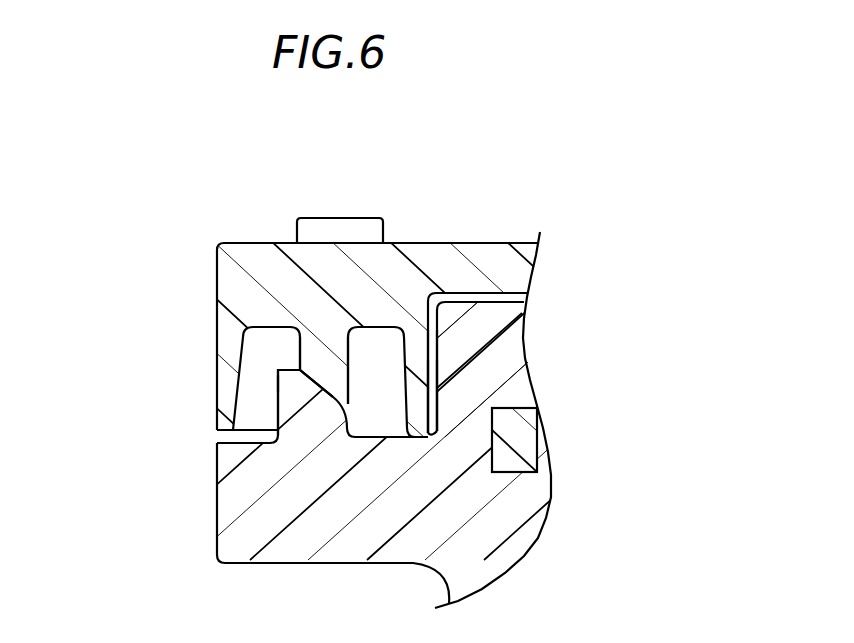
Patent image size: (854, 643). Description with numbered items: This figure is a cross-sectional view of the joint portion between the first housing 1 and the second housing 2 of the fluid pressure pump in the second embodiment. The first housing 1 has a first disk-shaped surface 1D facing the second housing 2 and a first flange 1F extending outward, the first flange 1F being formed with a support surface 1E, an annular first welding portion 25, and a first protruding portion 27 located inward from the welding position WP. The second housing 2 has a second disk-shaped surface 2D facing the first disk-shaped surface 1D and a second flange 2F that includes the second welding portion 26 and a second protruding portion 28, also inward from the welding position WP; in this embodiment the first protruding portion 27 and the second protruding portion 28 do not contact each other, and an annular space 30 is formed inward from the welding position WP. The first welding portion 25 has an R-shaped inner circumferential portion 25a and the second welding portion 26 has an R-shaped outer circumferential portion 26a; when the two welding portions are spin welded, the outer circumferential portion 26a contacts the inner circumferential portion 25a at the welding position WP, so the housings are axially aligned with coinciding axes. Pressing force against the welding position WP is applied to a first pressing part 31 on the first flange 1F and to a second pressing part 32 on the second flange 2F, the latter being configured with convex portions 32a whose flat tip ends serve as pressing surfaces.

The first housing 1 is at (435, 420).
The first flange 1F is at (215, 270).
The second housing 2 is at (421, 437).
The second flange 2F is at (215, 462).
The first disk-shaped surface 1D is at (473, 293).
The support surface 1E is at (495, 418).
The second disk-shaped surface 2D is at (503, 305).
The first welding portion 25 is at (277, 403).
The inner circumferential portion 25a is at (330, 390).
The second welding portion 26 is at (313, 358).
The outer circumferential portion 26a is at (311, 388).
The first protruding portion 27 is at (442, 368).
The second protruding portion 28 is at (435, 343).
The annular space 30 is at (393, 396).
The first pressing part 31 is at (258, 563).
The second pressing part 32 is at (264, 209).
The convex portion 32a is at (317, 226).
The welding position WP is at (268, 382).